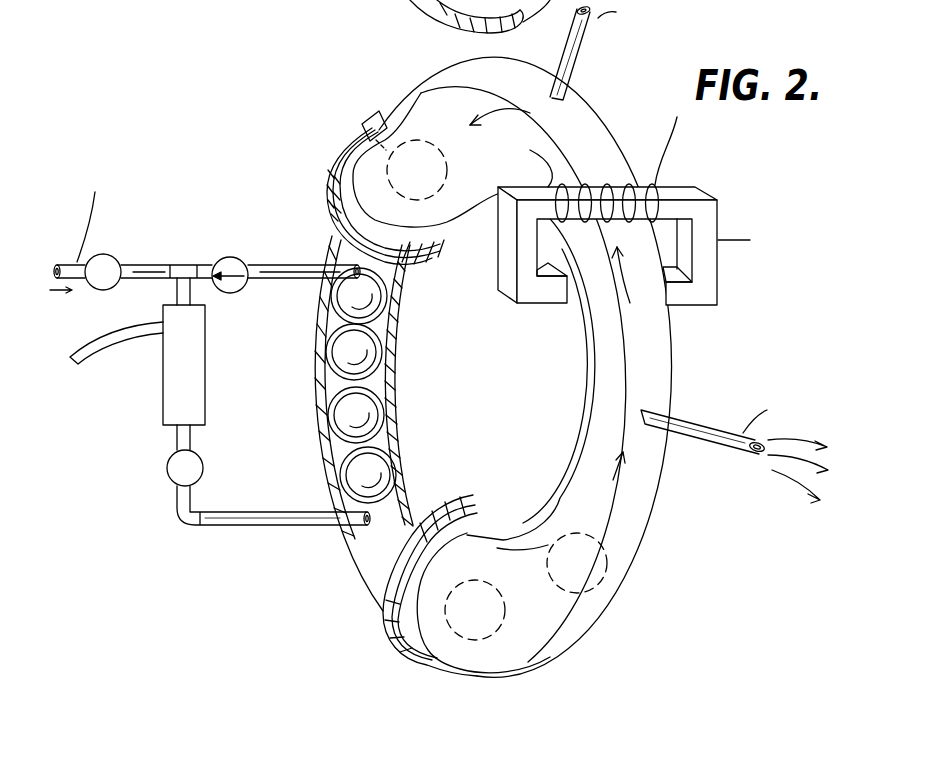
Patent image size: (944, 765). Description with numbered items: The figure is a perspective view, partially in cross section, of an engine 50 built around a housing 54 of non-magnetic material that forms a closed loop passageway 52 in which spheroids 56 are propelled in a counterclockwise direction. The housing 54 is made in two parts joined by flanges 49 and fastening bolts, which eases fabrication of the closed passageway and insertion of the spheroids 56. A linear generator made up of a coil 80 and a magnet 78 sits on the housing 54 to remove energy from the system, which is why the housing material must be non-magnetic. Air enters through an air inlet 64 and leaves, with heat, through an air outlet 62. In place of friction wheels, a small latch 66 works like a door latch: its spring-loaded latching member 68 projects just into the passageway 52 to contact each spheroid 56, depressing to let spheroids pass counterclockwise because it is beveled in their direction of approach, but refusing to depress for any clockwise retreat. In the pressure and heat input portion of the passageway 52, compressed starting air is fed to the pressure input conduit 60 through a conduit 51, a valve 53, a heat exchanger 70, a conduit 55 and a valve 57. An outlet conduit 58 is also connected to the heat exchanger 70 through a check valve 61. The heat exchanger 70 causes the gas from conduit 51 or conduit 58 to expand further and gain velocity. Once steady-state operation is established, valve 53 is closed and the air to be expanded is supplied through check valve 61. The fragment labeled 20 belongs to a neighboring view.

The rotor ring of FIG. 1 20 is at (432, 19).
The flanges 49 is at (443, 245).
The engine 50 is at (670, 387).
The conduit 51 is at (62, 262).
The passageway 52 is at (350, 538).
The valve 53 is at (117, 257).
The housing 54 is at (628, 520).
The conduit 55 is at (190, 436).
The spheroids 56 is at (373, 473).
The valve 57 is at (205, 465).
The outlet conduit 58 is at (282, 260).
The pressure input conduit 60 is at (257, 524).
The check valve 61 is at (227, 257).
The air outlet 62 is at (706, 446).
The air inlet 64 is at (580, 55).
The latch 66 is at (377, 115).
The spring-loaded latching member 68 is at (380, 137).
The heat exchanger 70 is at (203, 372).
The magnet 78 is at (713, 210).
The coil 80 is at (672, 158).